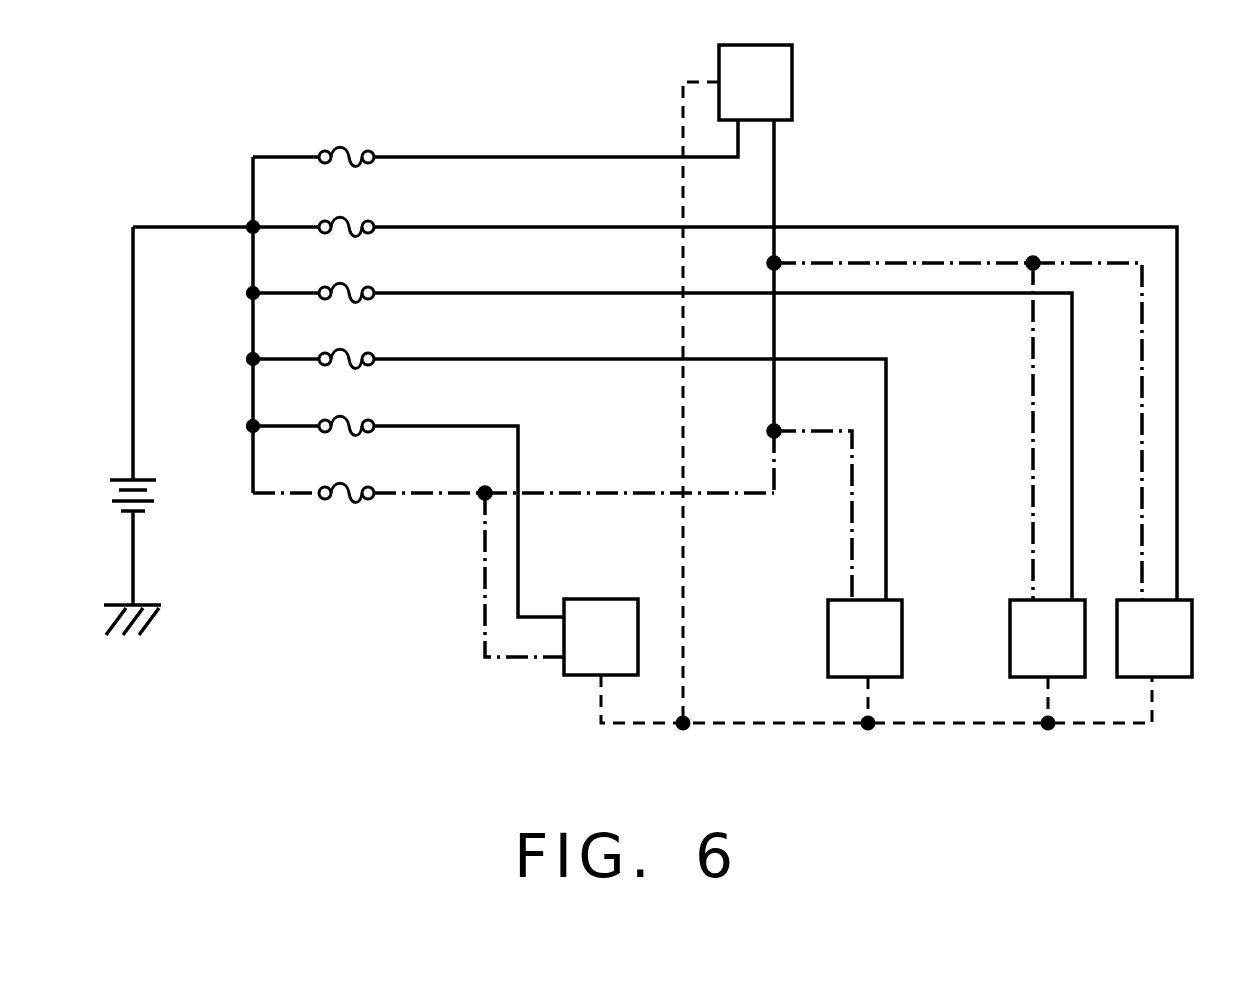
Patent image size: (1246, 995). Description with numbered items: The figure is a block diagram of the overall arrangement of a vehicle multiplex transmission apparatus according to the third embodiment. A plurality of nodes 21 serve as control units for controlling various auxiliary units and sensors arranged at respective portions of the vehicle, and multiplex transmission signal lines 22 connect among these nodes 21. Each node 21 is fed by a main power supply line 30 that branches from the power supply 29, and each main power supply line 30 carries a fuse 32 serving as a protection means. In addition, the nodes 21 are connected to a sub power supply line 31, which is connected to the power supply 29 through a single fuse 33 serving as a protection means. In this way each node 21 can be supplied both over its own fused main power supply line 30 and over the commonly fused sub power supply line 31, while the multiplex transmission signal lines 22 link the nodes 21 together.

The node 21 is at (905, 361).
The multiplex transmission signal line 22 is at (876, 438).
The power supply 29 is at (162, 490).
The main power supply line 30 is at (715, 351).
The sub power supply line 31 is at (452, 497).
The fuse 32 is at (376, 260).
The fuse 33 is at (343, 500).